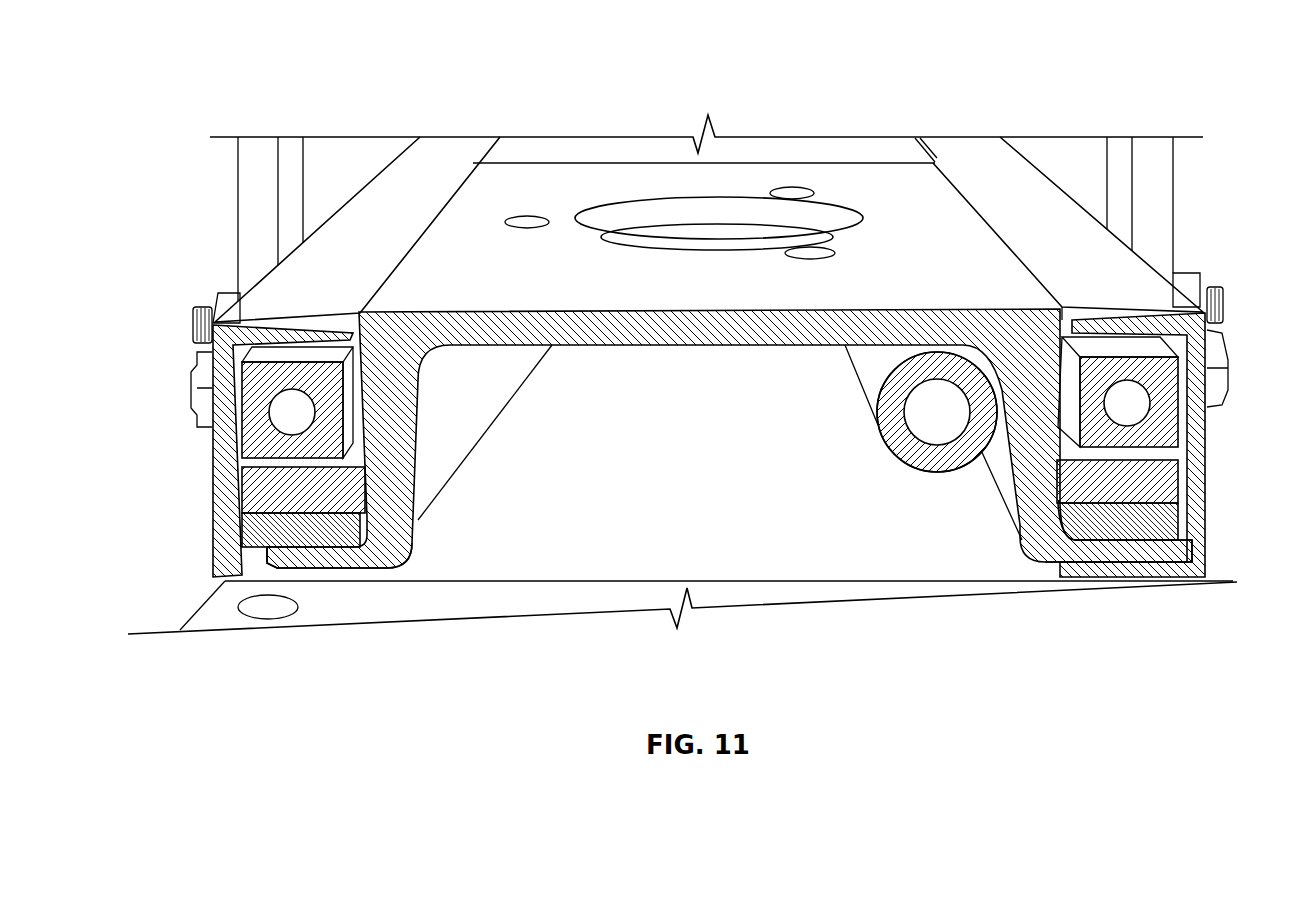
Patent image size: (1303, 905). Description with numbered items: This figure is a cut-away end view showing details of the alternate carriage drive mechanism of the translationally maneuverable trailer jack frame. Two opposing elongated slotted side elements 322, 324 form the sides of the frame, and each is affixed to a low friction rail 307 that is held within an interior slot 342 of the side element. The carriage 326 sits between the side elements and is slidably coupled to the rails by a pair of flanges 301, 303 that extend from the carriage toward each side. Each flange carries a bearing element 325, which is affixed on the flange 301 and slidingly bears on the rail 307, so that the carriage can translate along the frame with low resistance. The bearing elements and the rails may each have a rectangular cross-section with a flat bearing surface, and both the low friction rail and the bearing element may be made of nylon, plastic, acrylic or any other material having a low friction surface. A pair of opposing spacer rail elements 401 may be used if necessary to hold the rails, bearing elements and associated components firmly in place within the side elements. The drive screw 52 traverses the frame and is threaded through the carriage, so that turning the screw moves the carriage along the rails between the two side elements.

The drive screw 52 is at (898, 445).
The flange 301 is at (302, 558).
The flange 303 is at (1103, 547).
The low friction rail 307 is at (263, 478).
The elongated slotted side element 322 is at (213, 455).
The elongated slotted side element 324 is at (1120, 232).
The bearing element 325 is at (262, 535).
The carriage 326 is at (584, 195).
The interior slot 342 is at (357, 455).
The spacer rail element 401 is at (240, 392).